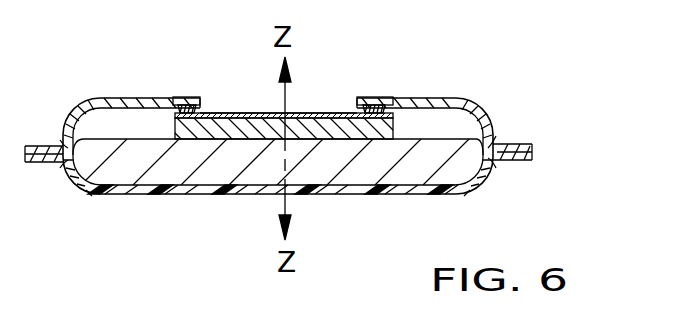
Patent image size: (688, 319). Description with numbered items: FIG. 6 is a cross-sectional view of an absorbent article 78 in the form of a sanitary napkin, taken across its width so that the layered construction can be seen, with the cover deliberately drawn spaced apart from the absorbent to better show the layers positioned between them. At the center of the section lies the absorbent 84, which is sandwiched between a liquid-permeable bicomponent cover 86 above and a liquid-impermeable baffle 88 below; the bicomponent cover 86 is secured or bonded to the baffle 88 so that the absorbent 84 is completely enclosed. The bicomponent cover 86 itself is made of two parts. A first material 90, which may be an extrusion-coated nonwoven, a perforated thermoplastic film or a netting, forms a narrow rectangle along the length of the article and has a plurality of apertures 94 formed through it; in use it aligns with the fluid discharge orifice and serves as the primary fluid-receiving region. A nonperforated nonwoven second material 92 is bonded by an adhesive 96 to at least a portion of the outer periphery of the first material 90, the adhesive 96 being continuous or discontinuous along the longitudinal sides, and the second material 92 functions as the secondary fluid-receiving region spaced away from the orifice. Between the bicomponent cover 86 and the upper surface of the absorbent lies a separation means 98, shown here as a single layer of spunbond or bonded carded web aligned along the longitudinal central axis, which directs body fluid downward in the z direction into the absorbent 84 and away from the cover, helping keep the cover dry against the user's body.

The absorbent article 78 is at (572, 52).
The absorbent 84 is at (182, 168).
The bicomponent cover 86 is at (278, 124).
The baffle 88 is at (418, 196).
The first material 90 is at (335, 112).
The second material 92 is at (103, 97).
The apertures 94 is at (212, 113).
The adhesive 96 is at (192, 100).
The separation means 98 is at (393, 132).